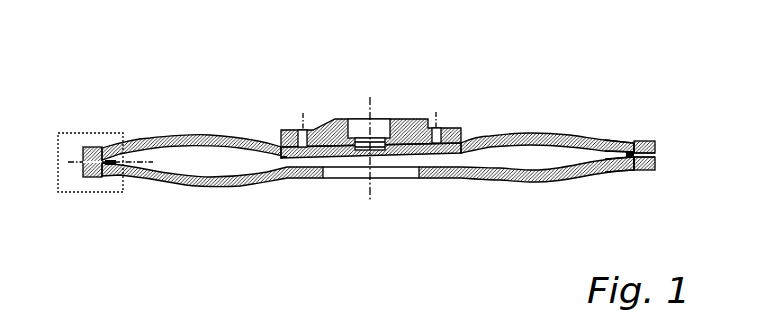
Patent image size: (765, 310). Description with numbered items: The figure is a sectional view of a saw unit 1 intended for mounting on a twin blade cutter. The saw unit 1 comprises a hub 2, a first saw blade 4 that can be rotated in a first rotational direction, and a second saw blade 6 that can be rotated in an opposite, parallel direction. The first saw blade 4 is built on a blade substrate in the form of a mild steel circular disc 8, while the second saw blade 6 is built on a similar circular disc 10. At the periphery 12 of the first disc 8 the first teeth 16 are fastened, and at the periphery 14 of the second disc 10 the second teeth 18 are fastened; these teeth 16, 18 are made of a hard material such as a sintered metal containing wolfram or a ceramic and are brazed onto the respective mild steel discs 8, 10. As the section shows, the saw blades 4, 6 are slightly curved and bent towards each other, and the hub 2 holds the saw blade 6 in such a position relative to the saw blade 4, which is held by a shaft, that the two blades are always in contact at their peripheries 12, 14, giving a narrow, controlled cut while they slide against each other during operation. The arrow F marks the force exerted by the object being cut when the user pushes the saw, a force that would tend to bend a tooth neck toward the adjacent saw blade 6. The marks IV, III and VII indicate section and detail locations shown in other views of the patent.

The saw unit 1 is at (257, 97).
The hub 2 is at (404, 119).
The first saw blade 4 is at (173, 197).
The second saw blade 6 is at (204, 127).
The circular disc 8 is at (535, 181).
The circular disc 10 is at (550, 132).
The periphery 12 is at (628, 172).
The periphery 14 is at (617, 142).
The first teeth 16 is at (650, 172).
The second teeth 18 is at (652, 140).
The force F is at (91, 184).
The section IV- IV is at (75, 155).
The detail VII is at (73, 192).
The section III- III is at (350, 302).